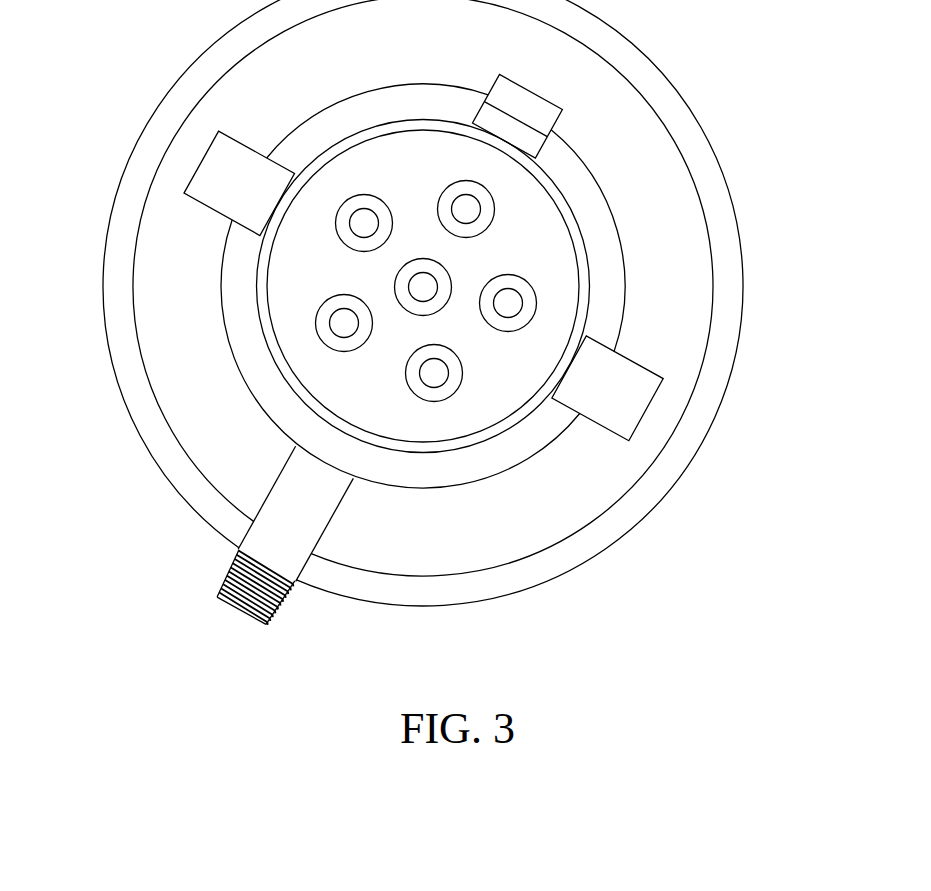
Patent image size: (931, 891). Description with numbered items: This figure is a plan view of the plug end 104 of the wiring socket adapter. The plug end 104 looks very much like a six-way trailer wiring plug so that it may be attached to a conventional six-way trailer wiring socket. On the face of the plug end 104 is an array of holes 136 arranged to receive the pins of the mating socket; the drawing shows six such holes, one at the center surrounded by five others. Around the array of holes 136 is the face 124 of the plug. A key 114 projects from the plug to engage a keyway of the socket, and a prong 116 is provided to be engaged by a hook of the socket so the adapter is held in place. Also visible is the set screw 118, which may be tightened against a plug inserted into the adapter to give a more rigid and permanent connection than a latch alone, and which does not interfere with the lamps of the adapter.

The plug end 104 is at (746, 286).
The key 114 is at (522, 146).
The prong 116 is at (494, 85).
The set screw 118 is at (287, 597).
The connector face 124 is at (535, 228).
The holes 136 is at (356, 220).